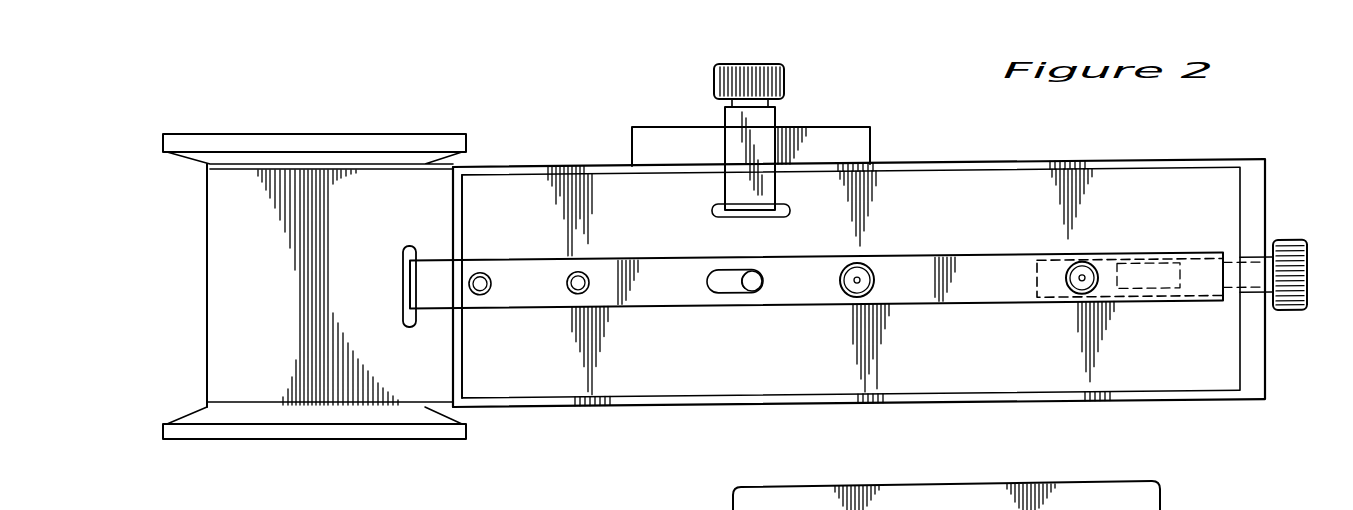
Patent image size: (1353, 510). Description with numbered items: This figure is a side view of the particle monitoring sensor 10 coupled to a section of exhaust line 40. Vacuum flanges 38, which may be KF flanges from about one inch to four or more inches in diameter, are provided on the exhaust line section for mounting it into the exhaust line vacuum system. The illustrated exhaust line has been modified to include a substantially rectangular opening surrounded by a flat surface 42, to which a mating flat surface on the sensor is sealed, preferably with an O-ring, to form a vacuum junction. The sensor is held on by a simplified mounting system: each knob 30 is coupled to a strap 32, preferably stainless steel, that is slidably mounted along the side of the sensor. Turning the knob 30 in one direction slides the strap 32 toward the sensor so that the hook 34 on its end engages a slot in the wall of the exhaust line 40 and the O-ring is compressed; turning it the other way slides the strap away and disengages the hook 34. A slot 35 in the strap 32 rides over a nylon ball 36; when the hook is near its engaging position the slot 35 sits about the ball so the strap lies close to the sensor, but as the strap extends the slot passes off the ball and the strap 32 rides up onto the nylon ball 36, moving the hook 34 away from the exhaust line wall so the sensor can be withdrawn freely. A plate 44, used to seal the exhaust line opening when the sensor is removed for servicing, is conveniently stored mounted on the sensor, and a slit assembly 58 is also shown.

The device 10 is at (666, 432).
The knob 30 is at (1297, 272).
The strap 32 is at (667, 277).
The hook 34 is at (405, 287).
The slot 35 is at (723, 284).
The nylon ball 36 is at (759, 289).
The vacuum flange 38 is at (387, 435).
The section of exhaust line 40 is at (215, 322).
The flat surface 42 is at (452, 217).
The plate 44 is at (810, 147).
The slit assembly 58 is at (1094, 456).